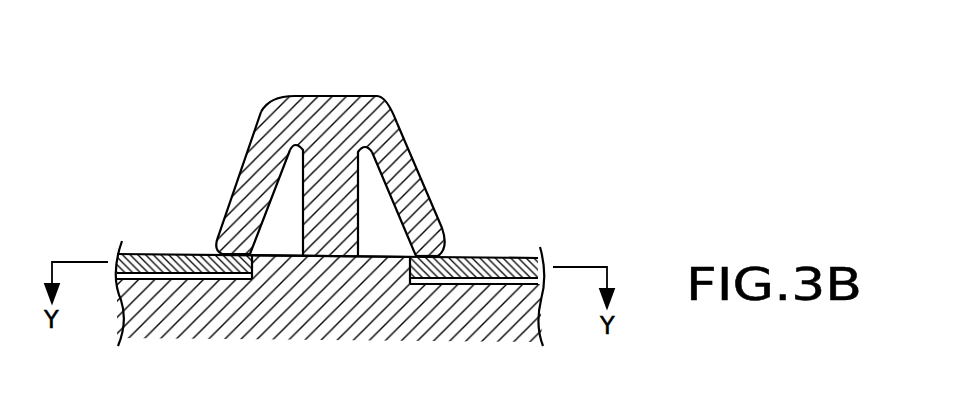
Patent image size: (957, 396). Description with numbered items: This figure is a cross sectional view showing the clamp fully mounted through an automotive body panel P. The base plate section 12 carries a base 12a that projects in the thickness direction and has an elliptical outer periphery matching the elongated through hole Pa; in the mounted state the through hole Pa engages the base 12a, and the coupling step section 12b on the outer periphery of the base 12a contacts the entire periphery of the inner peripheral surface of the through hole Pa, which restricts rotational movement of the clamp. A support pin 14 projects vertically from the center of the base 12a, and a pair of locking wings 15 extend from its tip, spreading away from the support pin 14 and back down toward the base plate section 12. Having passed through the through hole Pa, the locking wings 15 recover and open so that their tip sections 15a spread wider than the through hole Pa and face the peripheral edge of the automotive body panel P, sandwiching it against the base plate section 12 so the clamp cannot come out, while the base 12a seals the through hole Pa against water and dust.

The base plate section 12 is at (540, 248).
The base 12a is at (252, 256).
The coupling step section 12b is at (222, 255).
The support pin 14 is at (325, 178).
The locking wings 15 is at (247, 158).
The tip sections 15a is at (447, 253).
The automotive body panel P is at (514, 283).
The through hole Pa is at (400, 212).